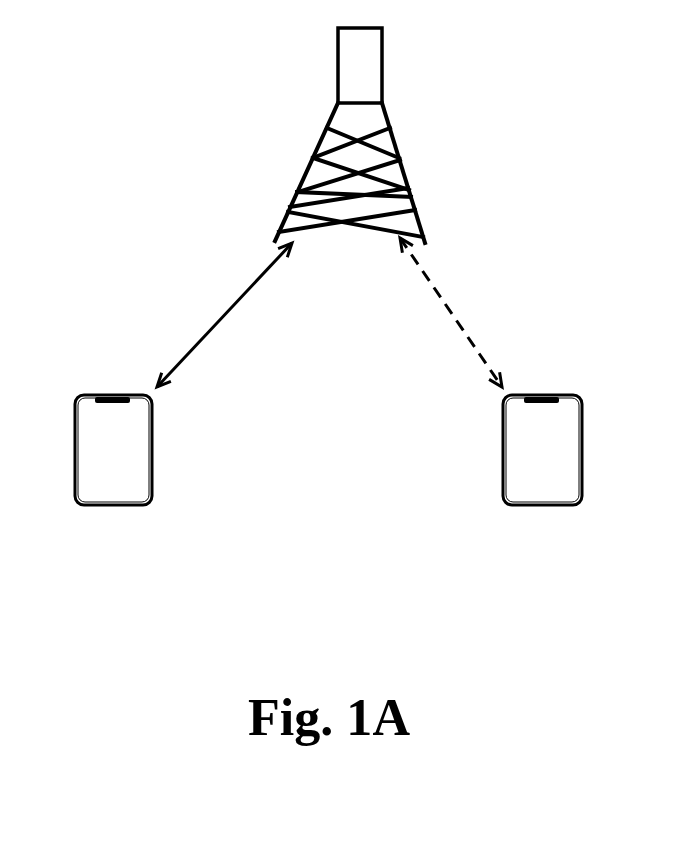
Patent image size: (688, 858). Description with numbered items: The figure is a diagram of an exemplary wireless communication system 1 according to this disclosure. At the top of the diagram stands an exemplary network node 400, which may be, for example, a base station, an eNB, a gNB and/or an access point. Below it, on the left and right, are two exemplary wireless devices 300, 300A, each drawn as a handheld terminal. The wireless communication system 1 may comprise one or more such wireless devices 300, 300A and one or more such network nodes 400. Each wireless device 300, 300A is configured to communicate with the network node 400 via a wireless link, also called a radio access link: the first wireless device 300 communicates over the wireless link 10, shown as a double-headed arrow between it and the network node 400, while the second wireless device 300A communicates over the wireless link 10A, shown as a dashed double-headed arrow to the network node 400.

The wireless communication system 1 is at (145, 84).
The network node 400 is at (410, 188).
The wireless link 10 is at (208, 331).
The wireless link 10A is at (458, 320).
The wireless device 300 is at (113, 450).
The wireless device 300A is at (542, 450).